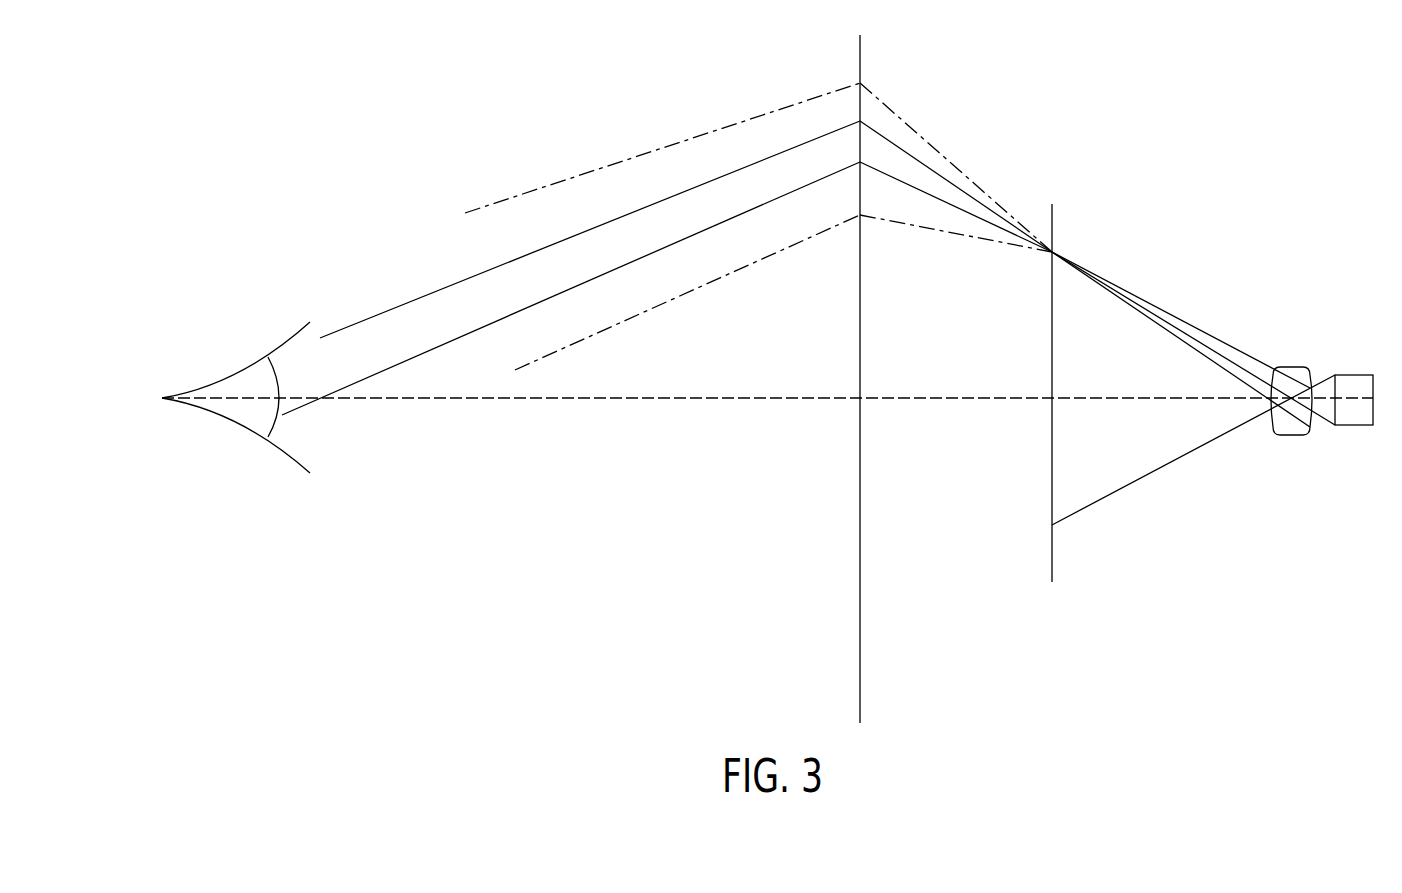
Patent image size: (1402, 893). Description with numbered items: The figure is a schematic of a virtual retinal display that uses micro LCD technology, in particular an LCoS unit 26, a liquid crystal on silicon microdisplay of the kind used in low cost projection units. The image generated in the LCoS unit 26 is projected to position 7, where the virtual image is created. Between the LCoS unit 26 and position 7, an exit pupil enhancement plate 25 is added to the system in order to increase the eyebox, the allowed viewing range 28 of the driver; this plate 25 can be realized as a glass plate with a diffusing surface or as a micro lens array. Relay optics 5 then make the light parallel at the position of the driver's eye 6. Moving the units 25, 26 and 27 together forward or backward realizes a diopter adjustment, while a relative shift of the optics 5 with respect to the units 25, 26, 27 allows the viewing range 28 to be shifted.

The relay optics 5 is at (862, 52).
The driver's eye 6 is at (245, 382).
The position 7 is at (1054, 215).
The exit pupil enhancement plate 25 is at (1054, 248).
The LCoS unit 26 is at (1354, 416).
The unit 27 is at (1293, 383).
The viewing range 28 is at (942, 152).